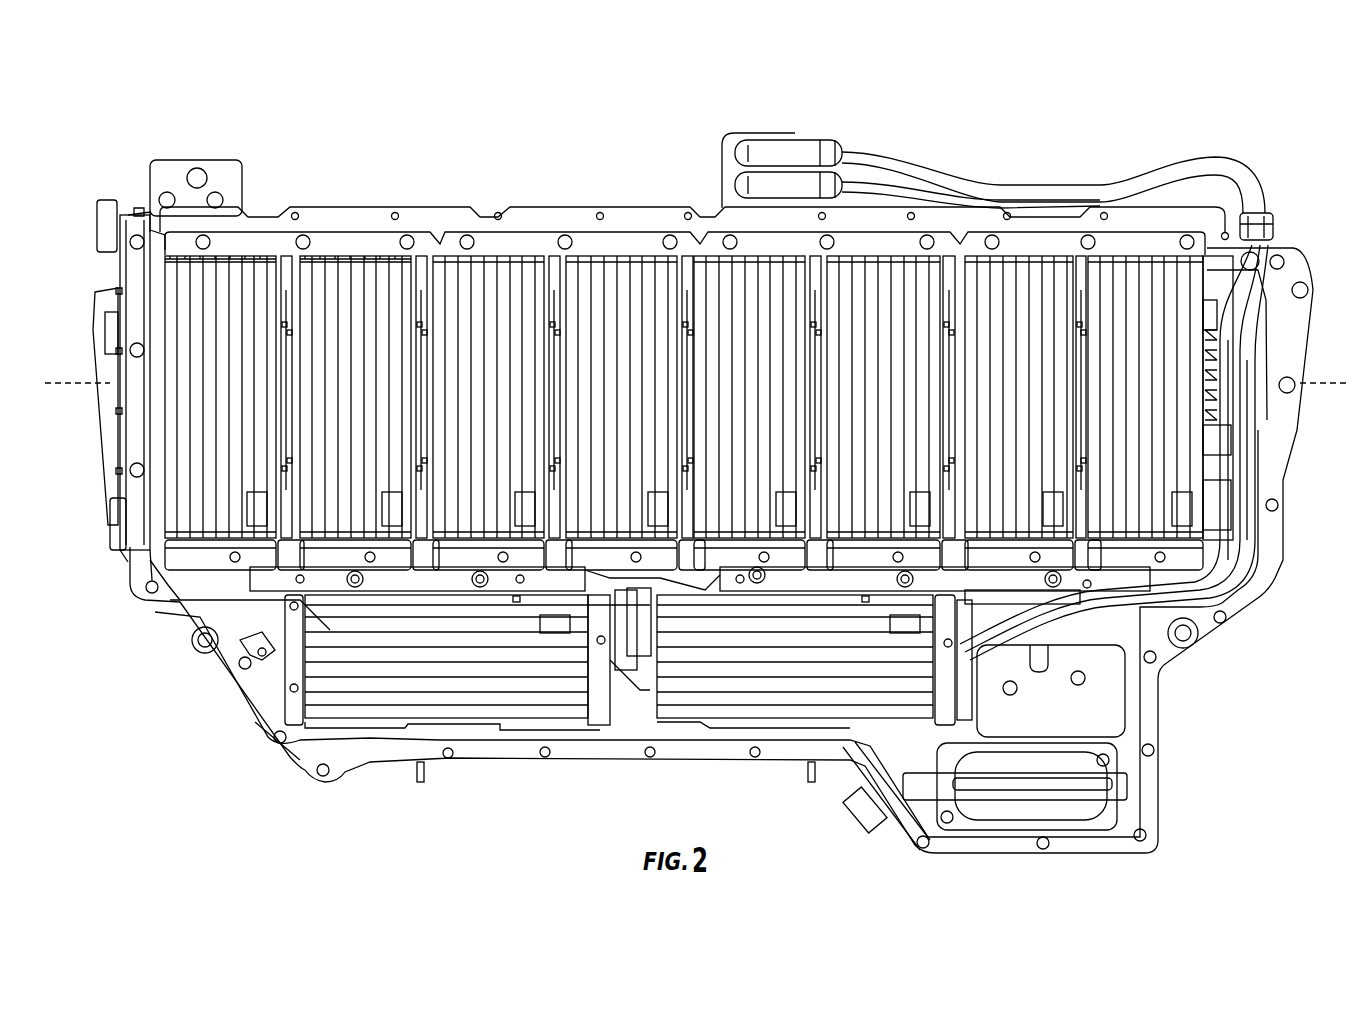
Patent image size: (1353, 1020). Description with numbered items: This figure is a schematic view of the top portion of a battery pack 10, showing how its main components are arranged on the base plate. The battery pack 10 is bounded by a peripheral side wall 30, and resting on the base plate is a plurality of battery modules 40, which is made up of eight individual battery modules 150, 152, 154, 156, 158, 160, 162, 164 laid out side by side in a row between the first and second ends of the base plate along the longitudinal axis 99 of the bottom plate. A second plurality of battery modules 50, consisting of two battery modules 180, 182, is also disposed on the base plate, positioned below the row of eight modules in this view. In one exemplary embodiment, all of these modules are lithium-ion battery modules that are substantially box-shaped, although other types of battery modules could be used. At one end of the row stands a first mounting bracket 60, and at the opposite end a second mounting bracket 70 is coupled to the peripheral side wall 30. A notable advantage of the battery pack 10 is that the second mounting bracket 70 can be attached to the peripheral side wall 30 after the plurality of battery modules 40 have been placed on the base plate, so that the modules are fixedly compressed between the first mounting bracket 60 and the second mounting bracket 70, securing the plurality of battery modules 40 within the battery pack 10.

The battery pack 10 is at (1066, 138).
The peripheral side wall 30 is at (138, 548).
The plurality of battery modules 40 is at (318, 258).
The plurality of battery modules 50 is at (703, 705).
The first mounting bracket 60 is at (1268, 432).
The second mounting bracket 70 is at (103, 292).
The longitudinal axis 99 is at (1320, 383).
The battery module 150 is at (196, 256).
The battery module 152 is at (370, 256).
The battery module 154 is at (496, 256).
The battery module 156 is at (590, 256).
The battery module 158 is at (708, 256).
The battery module 160 is at (880, 256).
The battery module 162 is at (1005, 256).
The battery module 164 is at (1135, 256).
The battery module 180 is at (465, 702).
The battery module 182 is at (775, 712).